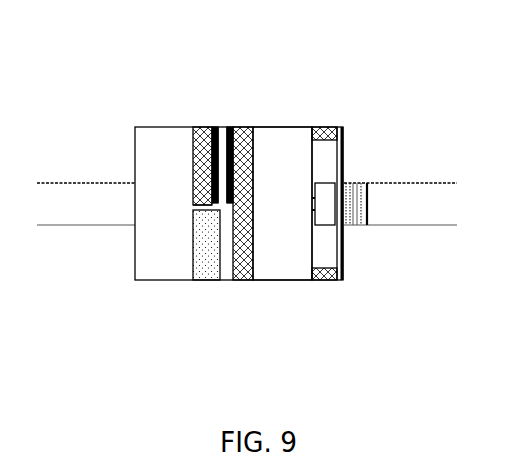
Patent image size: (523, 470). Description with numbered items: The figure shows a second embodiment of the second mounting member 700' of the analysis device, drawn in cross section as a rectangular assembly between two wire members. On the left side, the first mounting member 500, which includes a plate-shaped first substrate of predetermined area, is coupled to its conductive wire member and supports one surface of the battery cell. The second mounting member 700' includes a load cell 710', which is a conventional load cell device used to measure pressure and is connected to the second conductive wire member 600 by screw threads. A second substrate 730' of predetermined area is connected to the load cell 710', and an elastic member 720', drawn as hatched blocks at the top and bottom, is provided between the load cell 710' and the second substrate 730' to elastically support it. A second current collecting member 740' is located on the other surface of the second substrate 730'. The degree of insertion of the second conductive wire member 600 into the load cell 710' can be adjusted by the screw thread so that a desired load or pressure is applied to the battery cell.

The first mounting member 500 is at (134, 110).
The second conductive wire member 600 is at (424, 195).
The second mounting member 700' is at (396, 152).
The load cell 710' is at (384, 214).
The elastic member 720' is at (351, 203).
The second substrate 730' is at (282, 254).
The second current collecting member 740' is at (216, 254).